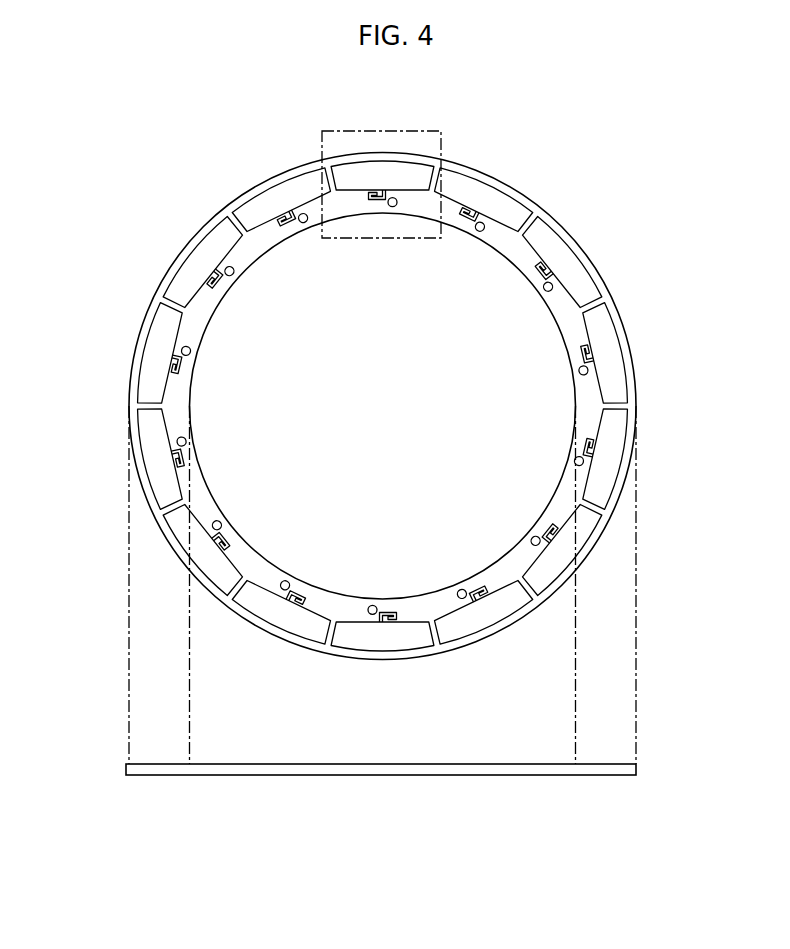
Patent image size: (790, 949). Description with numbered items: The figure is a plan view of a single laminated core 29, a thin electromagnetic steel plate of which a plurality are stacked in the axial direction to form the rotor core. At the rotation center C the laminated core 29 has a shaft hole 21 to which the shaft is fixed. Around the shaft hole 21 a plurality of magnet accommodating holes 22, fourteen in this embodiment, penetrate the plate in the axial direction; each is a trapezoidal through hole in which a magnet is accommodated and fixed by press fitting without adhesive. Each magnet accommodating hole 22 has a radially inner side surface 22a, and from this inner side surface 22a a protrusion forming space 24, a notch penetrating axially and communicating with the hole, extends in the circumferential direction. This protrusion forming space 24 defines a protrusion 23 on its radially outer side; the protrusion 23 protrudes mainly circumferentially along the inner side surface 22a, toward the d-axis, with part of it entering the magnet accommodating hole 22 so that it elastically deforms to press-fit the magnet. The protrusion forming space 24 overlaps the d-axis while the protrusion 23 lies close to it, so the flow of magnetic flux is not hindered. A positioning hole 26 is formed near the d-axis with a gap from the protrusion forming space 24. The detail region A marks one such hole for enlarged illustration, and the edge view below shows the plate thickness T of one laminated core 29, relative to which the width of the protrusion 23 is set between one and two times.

The laminated core 29 is at (128, 189).
The shaft hole 21 is at (268, 252).
The magnet accommodating hole 22 is at (512, 205).
The inner side surface 22a is at (448, 200).
The protrusion 23 is at (548, 263).
The protrusion forming space 24 is at (534, 270).
The positioning hole 26 is at (480, 232).
The region A is at (322, 158).
The rotation center C is at (383, 406).
The plate thickness T is at (636, 764).